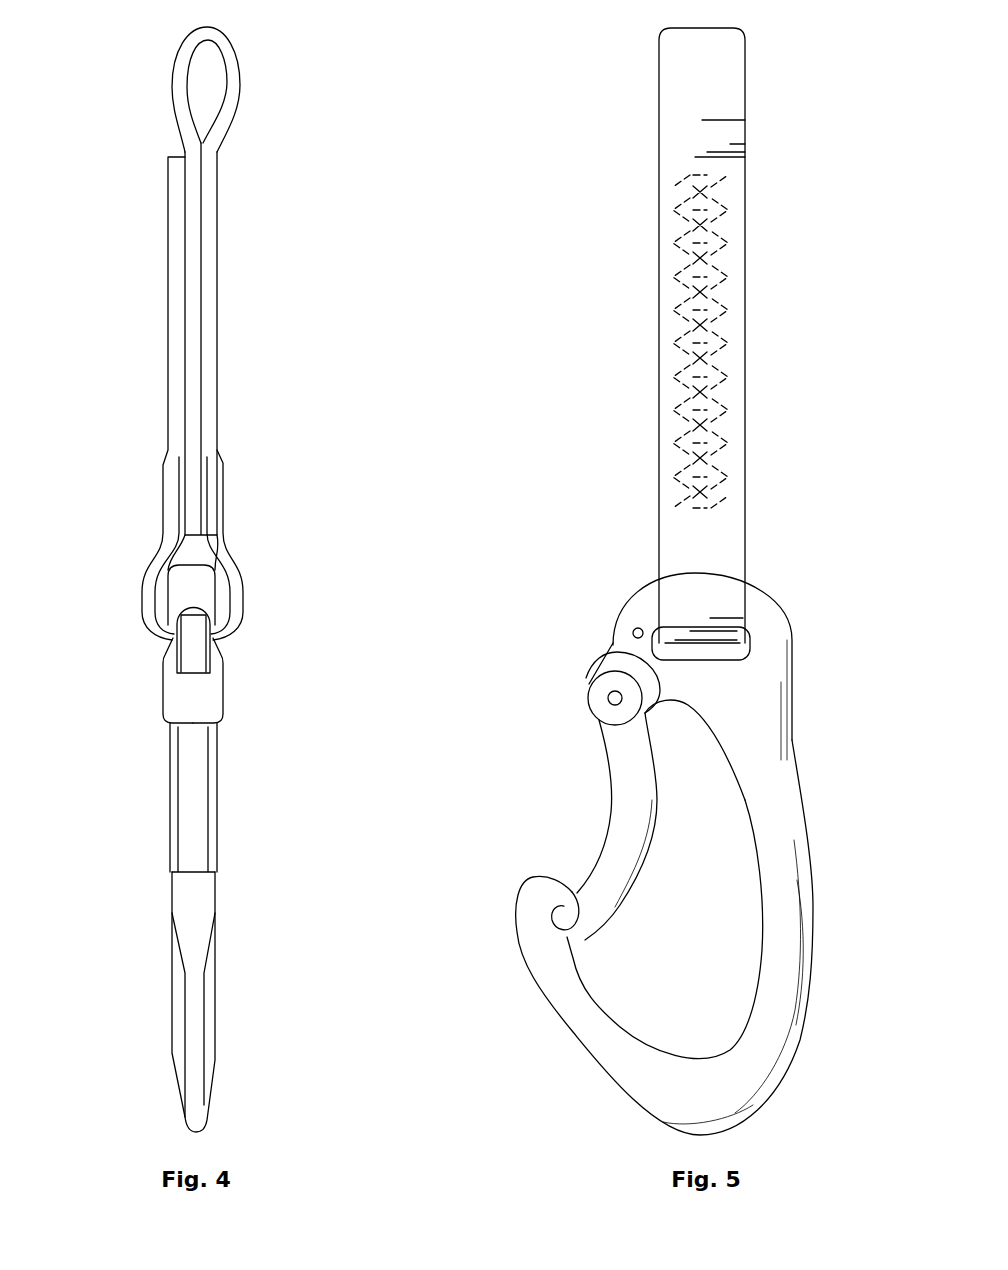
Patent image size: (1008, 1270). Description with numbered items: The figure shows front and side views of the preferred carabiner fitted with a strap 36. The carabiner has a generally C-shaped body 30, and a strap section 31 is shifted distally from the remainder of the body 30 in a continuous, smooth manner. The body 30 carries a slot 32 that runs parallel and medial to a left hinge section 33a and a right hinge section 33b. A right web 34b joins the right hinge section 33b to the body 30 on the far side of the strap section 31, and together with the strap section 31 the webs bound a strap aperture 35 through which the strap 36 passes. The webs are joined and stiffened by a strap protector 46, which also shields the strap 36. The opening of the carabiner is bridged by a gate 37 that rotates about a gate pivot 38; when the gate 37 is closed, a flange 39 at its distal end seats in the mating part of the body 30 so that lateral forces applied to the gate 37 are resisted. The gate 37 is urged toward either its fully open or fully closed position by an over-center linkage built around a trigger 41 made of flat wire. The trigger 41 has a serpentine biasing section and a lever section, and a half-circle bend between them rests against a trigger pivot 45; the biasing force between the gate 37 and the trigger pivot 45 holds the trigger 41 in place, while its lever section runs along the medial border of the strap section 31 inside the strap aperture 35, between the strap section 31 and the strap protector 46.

In FIG. 4, the body 30 is at (187, 1020).
In FIG. 5, the body 30 is at (773, 990).
In FIG. 4, the strap section 31 is at (190, 585).
In FIG. 5, the strap section 31 is at (753, 603).
In FIG. 4, the slot 32 is at (175, 652).
In FIG. 4, the left hinge section 33a is at (170, 703).
In FIG. 4, the right hinge section 33b is at (216, 700).
In FIG. 5, the right hinge section 33b is at (612, 674).
In FIG. 5, the right web 34b is at (727, 703).
In FIG. 5, the strap aperture 35 is at (712, 652).
In FIG. 4, the strap 36 is at (175, 340).
In FIG. 5, the strap 36 is at (737, 368).
In FIG. 4, the gate 37 is at (192, 807).
In FIG. 5, the gate 37 is at (630, 803).
In FIG. 5, the gate pivot 38 is at (612, 697).
In FIG. 5, the flange 39 is at (577, 920).
In FIG. 4, the trigger 41 is at (193, 658).
In FIG. 5, the trigger pivot 45 is at (634, 629).
In FIG. 4, the strap protector 46 is at (174, 548).